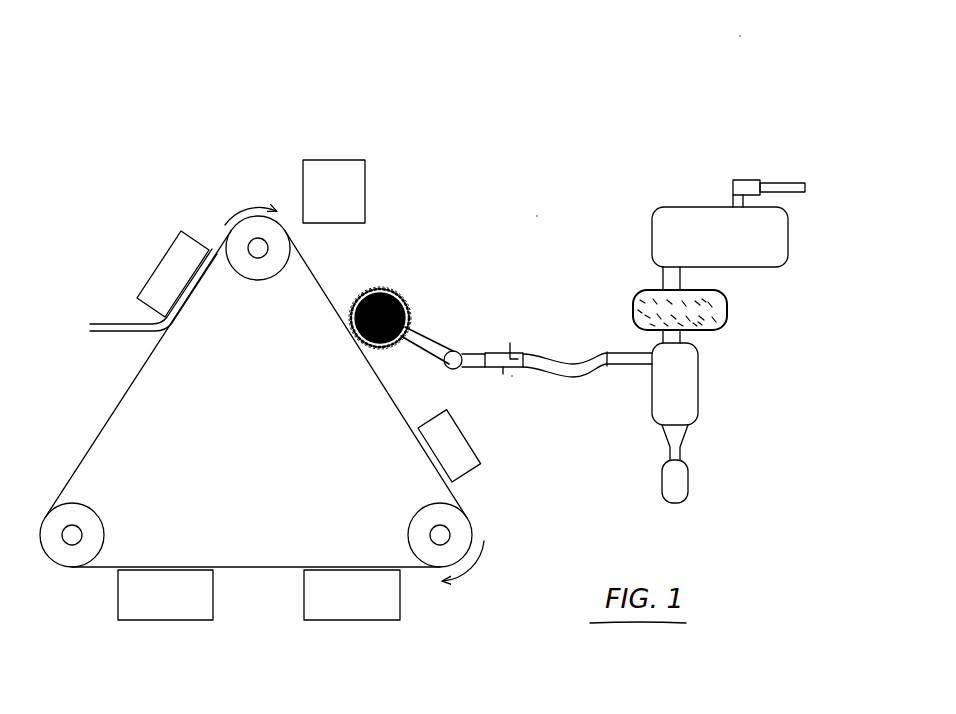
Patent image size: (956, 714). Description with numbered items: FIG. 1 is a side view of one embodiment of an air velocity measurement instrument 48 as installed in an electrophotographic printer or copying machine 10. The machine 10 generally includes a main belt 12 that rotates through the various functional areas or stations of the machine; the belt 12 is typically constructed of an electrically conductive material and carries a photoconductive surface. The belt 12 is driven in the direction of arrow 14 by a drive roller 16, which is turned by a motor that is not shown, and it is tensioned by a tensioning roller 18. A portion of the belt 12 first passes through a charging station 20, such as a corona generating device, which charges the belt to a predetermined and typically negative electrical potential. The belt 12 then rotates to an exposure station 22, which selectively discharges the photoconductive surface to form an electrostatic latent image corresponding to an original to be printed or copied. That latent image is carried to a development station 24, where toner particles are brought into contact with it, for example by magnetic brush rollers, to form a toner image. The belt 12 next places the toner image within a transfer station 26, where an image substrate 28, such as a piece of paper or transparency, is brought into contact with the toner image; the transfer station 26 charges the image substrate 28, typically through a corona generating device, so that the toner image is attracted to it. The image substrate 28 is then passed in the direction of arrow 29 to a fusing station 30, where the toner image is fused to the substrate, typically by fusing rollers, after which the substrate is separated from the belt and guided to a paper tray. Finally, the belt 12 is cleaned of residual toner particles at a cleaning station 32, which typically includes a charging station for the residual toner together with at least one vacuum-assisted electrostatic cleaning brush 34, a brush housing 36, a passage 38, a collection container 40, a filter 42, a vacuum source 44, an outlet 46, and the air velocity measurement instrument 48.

The electrophotographic printer or copying machine 10 is at (742, 34).
The main belt 12 is at (86, 445).
The arrow 14 is at (486, 556).
The drive roller 16 is at (419, 525).
The tensioning roller 18 is at (98, 529).
The charging station 20 is at (474, 463).
The exposure station 22 is at (356, 612).
The development station 24 is at (160, 608).
The transfer station 26 is at (174, 259).
The image substrate 28 is at (90, 324).
The arrow 29 is at (249, 207).
The fusing station 30 is at (368, 170).
The cleaning station 32 is at (537, 216).
The vacuum-assisted electrostatic cleaning brush 34 is at (394, 290).
The brush housing 36 is at (415, 332).
The passage 38 is at (557, 346).
The collection container 40 is at (682, 389).
The filter 42 is at (727, 308).
The vacuum source 44 is at (777, 256).
The outlet 46 is at (754, 180).
The air velocity measurement instrument 48 is at (512, 377).